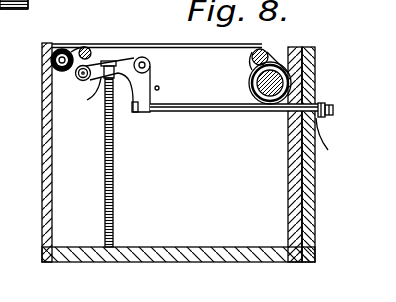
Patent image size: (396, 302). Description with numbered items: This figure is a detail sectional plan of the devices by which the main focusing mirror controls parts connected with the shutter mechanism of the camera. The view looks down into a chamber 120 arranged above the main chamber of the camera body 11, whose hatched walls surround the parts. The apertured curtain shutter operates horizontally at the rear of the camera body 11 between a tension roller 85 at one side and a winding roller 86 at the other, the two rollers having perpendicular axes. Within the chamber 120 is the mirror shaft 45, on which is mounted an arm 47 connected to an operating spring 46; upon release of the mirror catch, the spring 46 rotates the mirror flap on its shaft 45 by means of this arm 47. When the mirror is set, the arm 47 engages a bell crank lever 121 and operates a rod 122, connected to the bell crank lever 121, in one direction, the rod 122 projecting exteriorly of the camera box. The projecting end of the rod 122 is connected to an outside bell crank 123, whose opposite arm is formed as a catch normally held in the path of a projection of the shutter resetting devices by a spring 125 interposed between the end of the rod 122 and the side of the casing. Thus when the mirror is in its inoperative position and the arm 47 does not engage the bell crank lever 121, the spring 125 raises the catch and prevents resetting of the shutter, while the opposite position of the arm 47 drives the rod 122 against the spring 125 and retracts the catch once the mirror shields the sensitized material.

The camera body 11 is at (298, 222).
The mirror shaft 45 is at (84, 80).
The spring 46 is at (113, 158).
The arm 47 is at (105, 107).
The tension roller 85 is at (63, 53).
The winding roller 86 is at (268, 103).
The chamber 120 is at (250, 210).
The bell crank lever 121 is at (153, 86).
The rod 122 is at (223, 111).
The bell crank 123 is at (330, 104).
The spring 125 is at (338, 143).